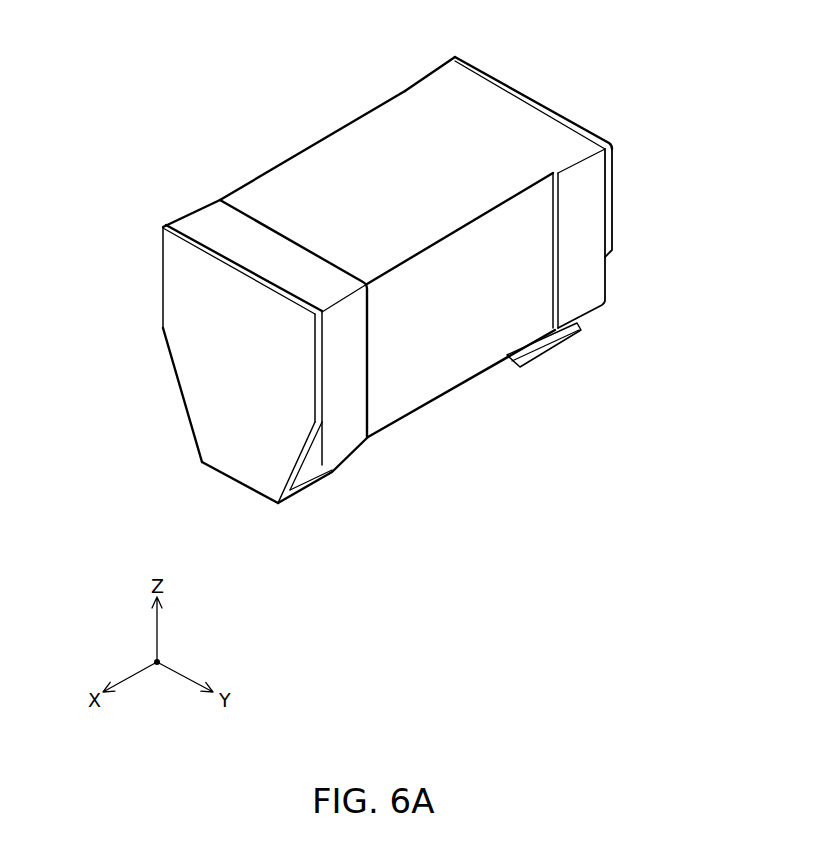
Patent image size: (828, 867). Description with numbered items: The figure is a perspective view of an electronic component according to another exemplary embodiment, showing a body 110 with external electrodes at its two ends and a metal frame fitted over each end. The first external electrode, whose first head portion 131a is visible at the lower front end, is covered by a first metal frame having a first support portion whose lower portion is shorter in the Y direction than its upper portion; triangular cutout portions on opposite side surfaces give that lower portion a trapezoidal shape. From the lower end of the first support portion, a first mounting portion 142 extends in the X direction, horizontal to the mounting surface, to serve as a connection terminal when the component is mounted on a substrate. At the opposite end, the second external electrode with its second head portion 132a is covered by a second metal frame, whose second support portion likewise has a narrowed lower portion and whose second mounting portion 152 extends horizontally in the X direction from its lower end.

The ceramic body 110 is at (323, 157).
The second head portion 132a is at (606, 287).
The second mounting portion 152 is at (538, 344).
The first mounting portion 142 is at (307, 474).
The first head portion 131a is at (318, 450).